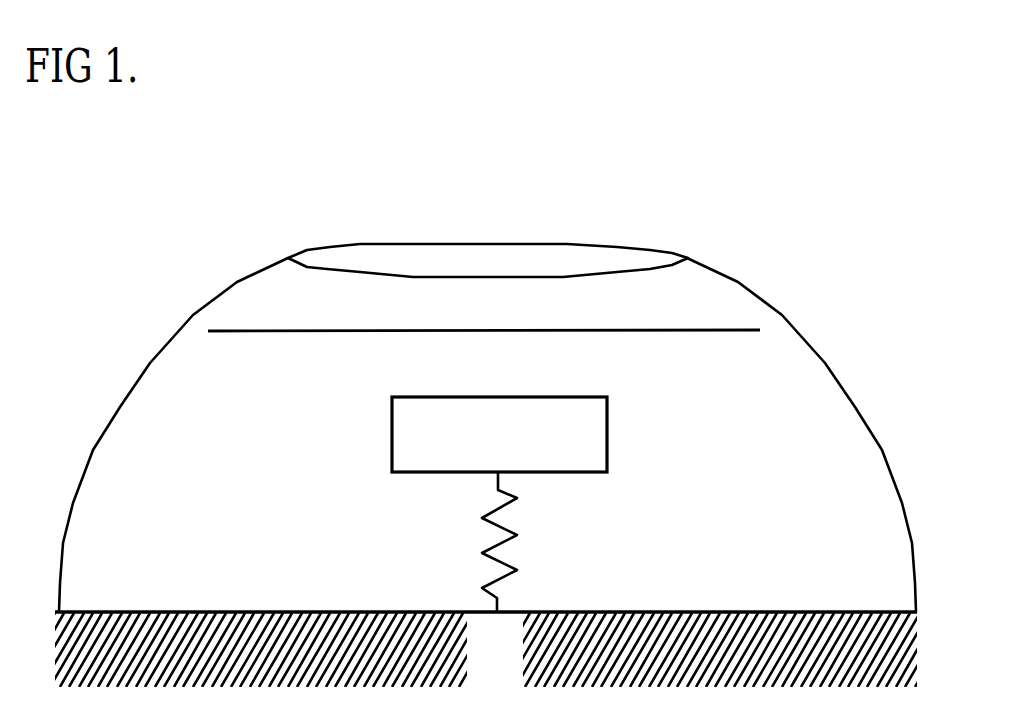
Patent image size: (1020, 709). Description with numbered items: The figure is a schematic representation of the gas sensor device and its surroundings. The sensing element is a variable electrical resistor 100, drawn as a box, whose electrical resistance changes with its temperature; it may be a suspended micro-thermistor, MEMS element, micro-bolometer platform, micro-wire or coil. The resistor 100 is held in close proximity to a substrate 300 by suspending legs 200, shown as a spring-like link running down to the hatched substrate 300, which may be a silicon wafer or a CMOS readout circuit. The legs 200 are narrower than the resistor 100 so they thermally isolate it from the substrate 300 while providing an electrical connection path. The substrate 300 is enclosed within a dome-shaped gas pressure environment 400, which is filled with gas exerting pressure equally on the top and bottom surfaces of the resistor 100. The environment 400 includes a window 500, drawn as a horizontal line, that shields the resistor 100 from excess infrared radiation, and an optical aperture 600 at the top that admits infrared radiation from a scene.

The variable electrical resistor 100 is at (660, 403).
The suspending legs 200 is at (490, 578).
The substrate 300 is at (625, 613).
The gas pressure environment 400 is at (113, 427).
The window 500 is at (365, 333).
The optical aperture 600 is at (662, 210).